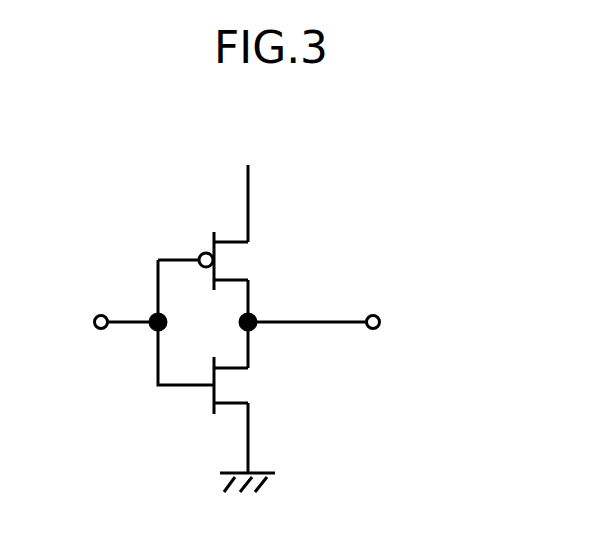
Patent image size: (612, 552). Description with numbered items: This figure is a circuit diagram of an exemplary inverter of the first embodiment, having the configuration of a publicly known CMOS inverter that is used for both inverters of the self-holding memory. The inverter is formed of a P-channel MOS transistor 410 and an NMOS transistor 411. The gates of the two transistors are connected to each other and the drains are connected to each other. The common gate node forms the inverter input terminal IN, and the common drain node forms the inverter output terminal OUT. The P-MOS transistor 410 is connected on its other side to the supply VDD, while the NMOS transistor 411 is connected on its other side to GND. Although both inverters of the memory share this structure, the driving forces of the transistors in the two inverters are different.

The P-channel MOS transistor 410 is at (245, 266).
The NMOS transistor 411 is at (245, 388).
The power supply terminal VDD is at (246, 191).
The input terminal IN is at (140, 322).
The output terminal OUT is at (336, 323).
The ground terminal GND is at (247, 499).